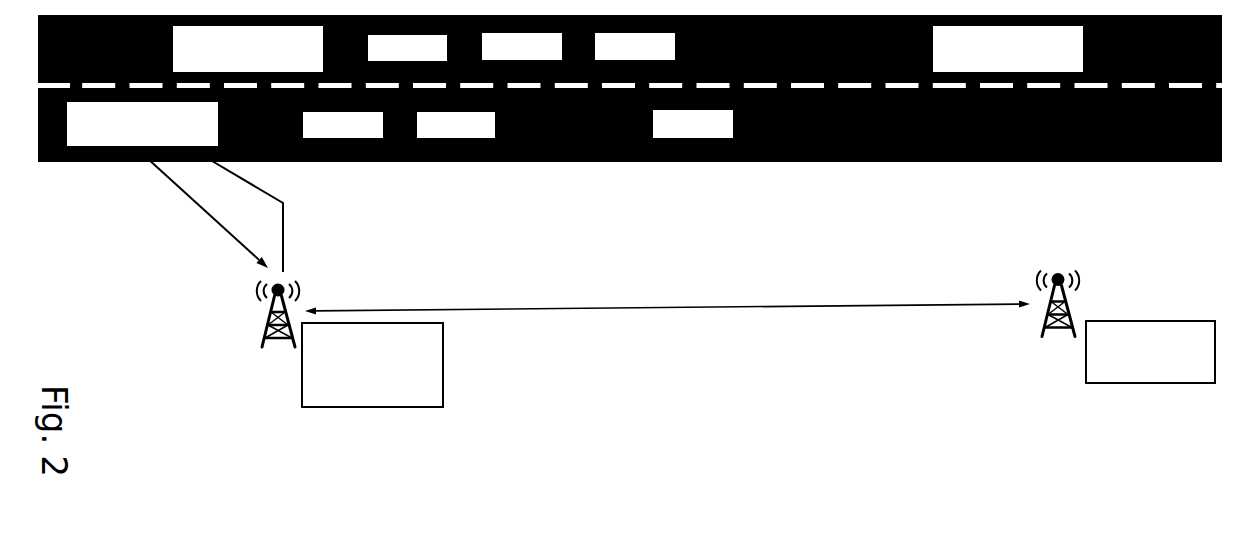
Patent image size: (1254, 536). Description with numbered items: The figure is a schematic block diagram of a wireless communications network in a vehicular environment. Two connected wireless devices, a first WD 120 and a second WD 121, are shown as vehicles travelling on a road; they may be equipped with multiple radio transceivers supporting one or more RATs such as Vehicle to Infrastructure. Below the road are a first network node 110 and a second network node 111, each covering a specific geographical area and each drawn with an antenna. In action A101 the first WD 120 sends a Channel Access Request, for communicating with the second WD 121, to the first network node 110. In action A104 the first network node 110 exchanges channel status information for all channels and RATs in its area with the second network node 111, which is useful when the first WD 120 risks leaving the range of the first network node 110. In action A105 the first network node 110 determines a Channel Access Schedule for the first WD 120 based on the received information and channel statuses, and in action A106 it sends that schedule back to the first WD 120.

The first wireless device 120 is at (172, 142).
The second wireless device 121 is at (988, 64).
The first network node 110 is at (395, 379).
The second network node 111 is at (1128, 362).
The channel access request action A101 is at (203, 213).
The channel status exchange action A104 is at (667, 329).
The channel access schedule determination action A105 is at (261, 341).
The channel access schedule sending action A106 is at (281, 215).